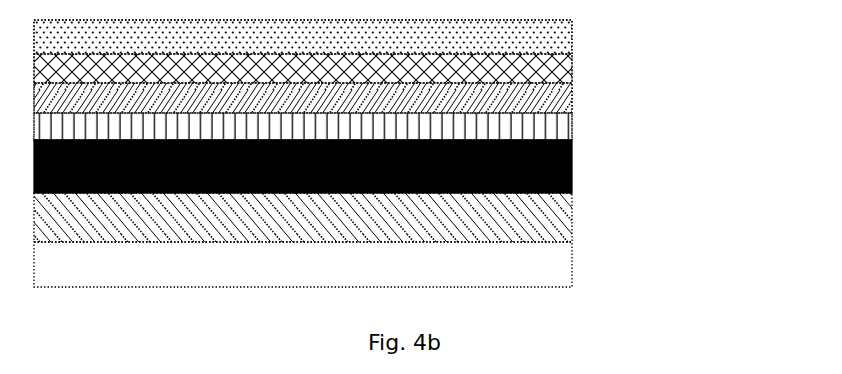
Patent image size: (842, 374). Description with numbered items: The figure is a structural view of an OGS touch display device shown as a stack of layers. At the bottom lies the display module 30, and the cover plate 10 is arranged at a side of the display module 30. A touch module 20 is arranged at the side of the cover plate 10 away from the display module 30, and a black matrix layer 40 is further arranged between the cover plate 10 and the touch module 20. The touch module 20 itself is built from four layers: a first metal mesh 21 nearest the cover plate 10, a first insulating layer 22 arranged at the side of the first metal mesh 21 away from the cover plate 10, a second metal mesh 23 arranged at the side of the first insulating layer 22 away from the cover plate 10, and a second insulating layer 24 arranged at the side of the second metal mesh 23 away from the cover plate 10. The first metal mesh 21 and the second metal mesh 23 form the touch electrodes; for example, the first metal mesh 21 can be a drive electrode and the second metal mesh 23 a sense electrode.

The touch module 20 is at (690, 19).
The second insulating layer 24 is at (572, 37).
The second metal mesh 23 is at (572, 68).
The first insulating layer 22 is at (572, 93).
The first metal mesh 21 is at (572, 118).
The black matrix layer 40 is at (572, 150).
The cover plate 10 is at (572, 220).
The display module 30 is at (572, 268).